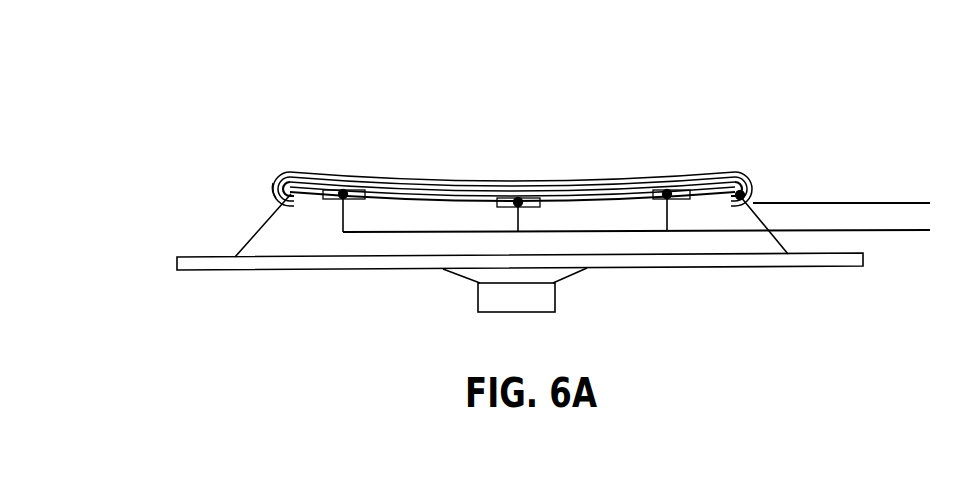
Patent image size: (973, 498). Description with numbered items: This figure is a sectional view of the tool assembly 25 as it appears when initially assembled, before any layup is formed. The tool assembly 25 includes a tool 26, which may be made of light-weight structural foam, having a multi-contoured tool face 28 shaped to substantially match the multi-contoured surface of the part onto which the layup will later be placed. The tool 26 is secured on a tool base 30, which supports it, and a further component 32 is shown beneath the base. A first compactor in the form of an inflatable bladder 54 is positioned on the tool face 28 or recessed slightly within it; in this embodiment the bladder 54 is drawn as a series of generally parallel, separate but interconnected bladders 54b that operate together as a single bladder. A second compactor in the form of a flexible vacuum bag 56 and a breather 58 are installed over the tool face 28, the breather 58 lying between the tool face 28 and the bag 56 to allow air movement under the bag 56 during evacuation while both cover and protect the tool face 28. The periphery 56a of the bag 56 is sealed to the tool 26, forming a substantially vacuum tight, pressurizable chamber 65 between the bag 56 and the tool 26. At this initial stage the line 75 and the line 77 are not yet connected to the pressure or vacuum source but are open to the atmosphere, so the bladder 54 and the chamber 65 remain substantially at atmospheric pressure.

The tool assembly 25 is at (468, 154).
The tool 26 is at (270, 242).
The tool face 28 is at (512, 144).
The tool base 30 is at (198, 262).
The electronic component 32 is at (478, 297).
The bladder 54 is at (331, 200).
The interconnected bladders 54b is at (530, 207).
The vacuum bag 56 is at (283, 172).
The periphery 56a is at (256, 203).
The breather 58 is at (728, 177).
The chamber 65 is at (472, 186).
The line 75 is at (891, 235).
The line 77 is at (851, 203).